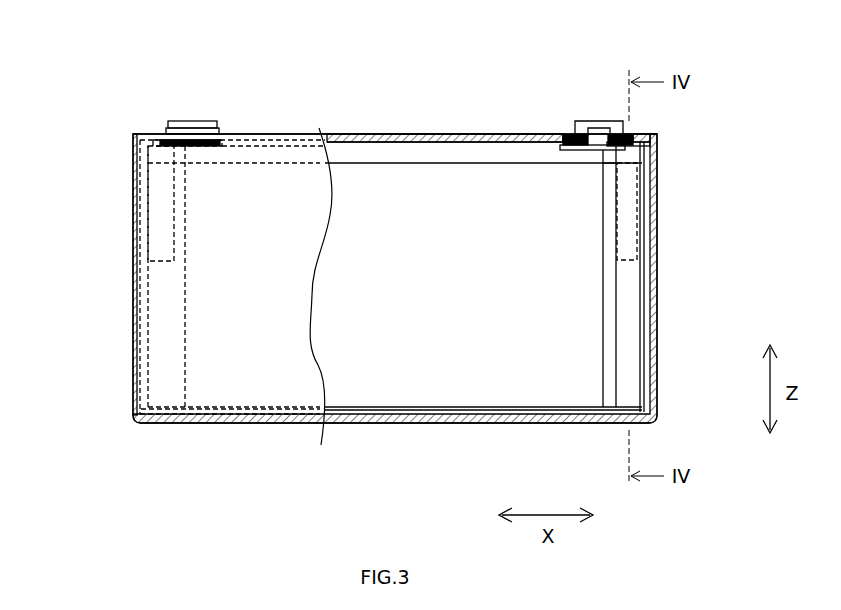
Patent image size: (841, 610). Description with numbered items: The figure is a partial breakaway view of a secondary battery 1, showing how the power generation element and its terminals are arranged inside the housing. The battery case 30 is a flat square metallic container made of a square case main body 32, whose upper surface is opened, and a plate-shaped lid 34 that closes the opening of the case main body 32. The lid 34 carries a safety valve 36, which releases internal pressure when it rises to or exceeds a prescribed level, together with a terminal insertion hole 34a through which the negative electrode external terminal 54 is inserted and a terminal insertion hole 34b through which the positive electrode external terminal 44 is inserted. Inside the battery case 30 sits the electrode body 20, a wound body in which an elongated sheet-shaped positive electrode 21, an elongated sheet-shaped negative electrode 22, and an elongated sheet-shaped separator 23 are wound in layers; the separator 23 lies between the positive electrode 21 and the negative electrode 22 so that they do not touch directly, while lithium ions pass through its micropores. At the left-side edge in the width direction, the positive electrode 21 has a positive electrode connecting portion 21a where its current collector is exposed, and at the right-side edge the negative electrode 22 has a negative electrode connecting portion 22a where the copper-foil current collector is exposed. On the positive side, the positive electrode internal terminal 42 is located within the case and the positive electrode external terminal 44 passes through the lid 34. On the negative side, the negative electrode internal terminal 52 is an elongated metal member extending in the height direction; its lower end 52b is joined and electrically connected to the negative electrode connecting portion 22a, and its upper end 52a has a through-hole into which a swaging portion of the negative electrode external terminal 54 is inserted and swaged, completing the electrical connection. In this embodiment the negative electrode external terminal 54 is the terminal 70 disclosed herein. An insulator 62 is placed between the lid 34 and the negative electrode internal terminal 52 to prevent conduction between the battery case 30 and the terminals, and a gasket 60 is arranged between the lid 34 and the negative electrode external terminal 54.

The secondary battery 1 is at (124, 50).
The electrode body 20 is at (470, 370).
The positive electrode 21 is at (146, 385).
The positive electrode connecting portion 21a is at (173, 398).
The negative electrode 22 is at (430, 278).
The negative electrode connecting portion 22a is at (638, 394).
The separator 23 is at (410, 396).
The battery case 30 is at (130, 304).
The case main body 32 is at (655, 200).
The lid 34 is at (445, 136).
The terminal insertion hole 34a is at (566, 146).
The terminal insertion hole 34b is at (168, 140).
The safety valve 36 is at (378, 136).
The positive electrode internal terminal 42 is at (140, 156).
The positive electrode external terminal 44 is at (187, 119).
The negative electrode internal terminal 52 is at (628, 153).
The upper end 52a is at (563, 155).
The lower end 52b is at (628, 250).
The negative electrode external terminal 54 is at (595, 84).
The gasket 60 is at (222, 134).
The insulator 62 is at (643, 141).
The terminal 70 is at (600, 118).